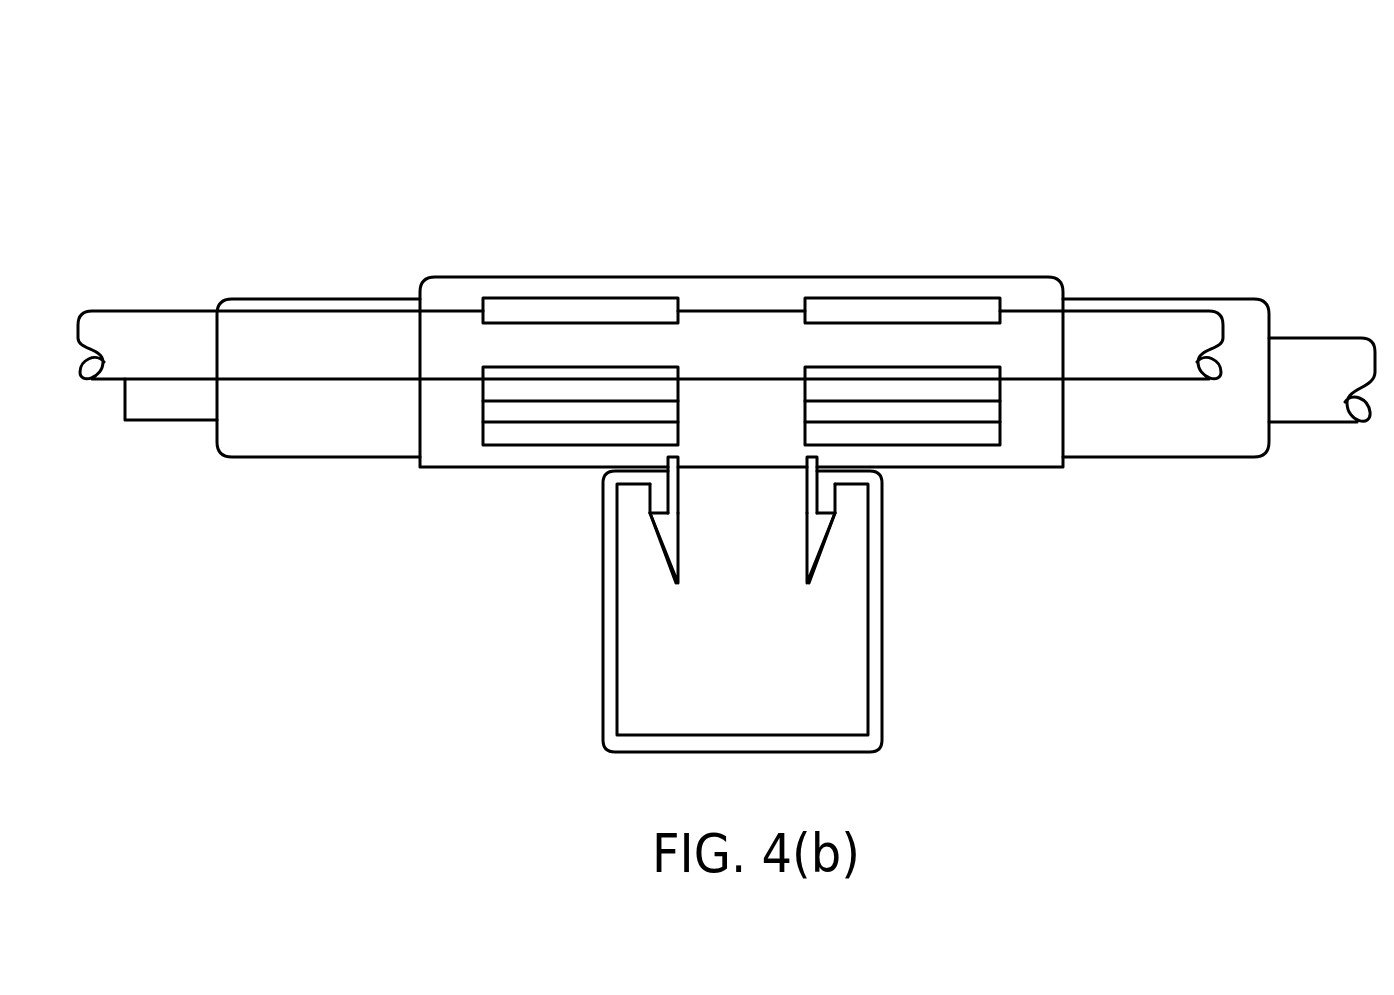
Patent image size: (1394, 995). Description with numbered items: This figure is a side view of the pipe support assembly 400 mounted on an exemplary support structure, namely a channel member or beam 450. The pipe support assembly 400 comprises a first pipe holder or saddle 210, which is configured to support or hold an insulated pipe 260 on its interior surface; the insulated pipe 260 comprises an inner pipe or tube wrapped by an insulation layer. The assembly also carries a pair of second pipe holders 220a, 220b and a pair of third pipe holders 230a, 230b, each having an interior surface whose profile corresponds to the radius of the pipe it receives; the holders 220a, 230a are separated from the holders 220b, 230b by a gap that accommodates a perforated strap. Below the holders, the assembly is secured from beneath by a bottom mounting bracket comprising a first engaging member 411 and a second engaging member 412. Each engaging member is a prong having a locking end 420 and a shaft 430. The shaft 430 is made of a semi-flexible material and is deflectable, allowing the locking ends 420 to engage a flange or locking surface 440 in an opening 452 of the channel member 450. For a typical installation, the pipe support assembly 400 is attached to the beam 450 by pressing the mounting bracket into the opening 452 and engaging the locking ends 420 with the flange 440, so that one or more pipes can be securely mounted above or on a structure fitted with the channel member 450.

The pipe support assembly 400 is at (1165, 197).
The first pipe holder 210 is at (428, 275).
The second pipe holder 220a is at (613, 288).
The second pipe holder 220b is at (812, 292).
The third pipe holder 230a is at (465, 445).
The third pipe holder 230b is at (975, 447).
The insulated pipe 260 is at (1258, 300).
The flange or locking surface 440 is at (655, 510).
The shaft 430 is at (767, 500).
The locking end 420 is at (705, 588).
The first engaging member 411 is at (650, 560).
The second engaging member 412 is at (827, 578).
The opening 452 is at (750, 570).
The channel member or beam 450 is at (882, 722).